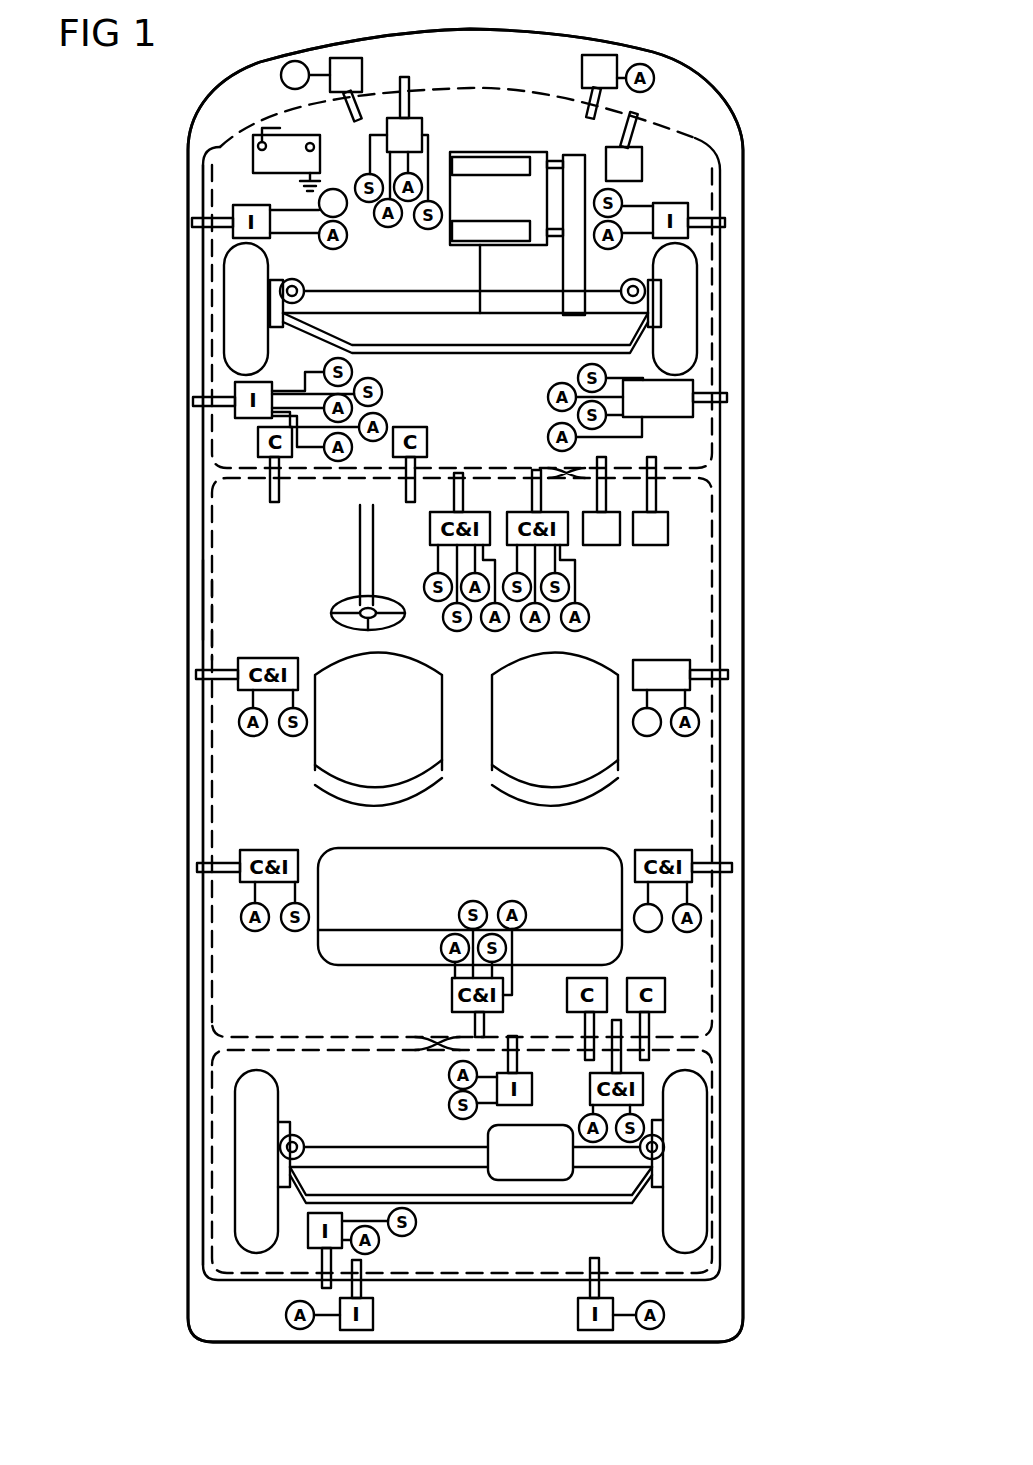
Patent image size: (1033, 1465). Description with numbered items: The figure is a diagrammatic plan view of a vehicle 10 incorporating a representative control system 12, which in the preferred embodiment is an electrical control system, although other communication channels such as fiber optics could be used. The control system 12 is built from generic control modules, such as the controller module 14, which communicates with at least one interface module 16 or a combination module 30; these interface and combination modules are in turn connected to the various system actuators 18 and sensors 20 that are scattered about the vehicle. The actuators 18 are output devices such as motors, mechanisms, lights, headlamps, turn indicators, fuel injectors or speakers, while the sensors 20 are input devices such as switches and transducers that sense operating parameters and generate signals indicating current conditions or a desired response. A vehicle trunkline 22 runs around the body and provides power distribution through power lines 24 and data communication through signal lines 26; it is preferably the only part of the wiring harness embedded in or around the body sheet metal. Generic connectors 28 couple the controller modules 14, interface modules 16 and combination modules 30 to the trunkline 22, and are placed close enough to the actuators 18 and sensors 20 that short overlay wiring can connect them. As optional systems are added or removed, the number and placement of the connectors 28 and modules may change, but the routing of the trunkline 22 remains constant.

The vehicle 10 is at (168, 727).
The control system 12 is at (668, 95).
The controller module 14 is at (642, 163).
The interface module 16 is at (424, 118).
The actuator 18 is at (291, 61).
The sensor 20 is at (320, 200).
The vehicle trunkline 22 is at (190, 534).
The power line 24 is at (203, 598).
The signal line 26 is at (208, 623).
The generic connector 28 is at (727, 397).
The combination module 30 is at (673, 658).